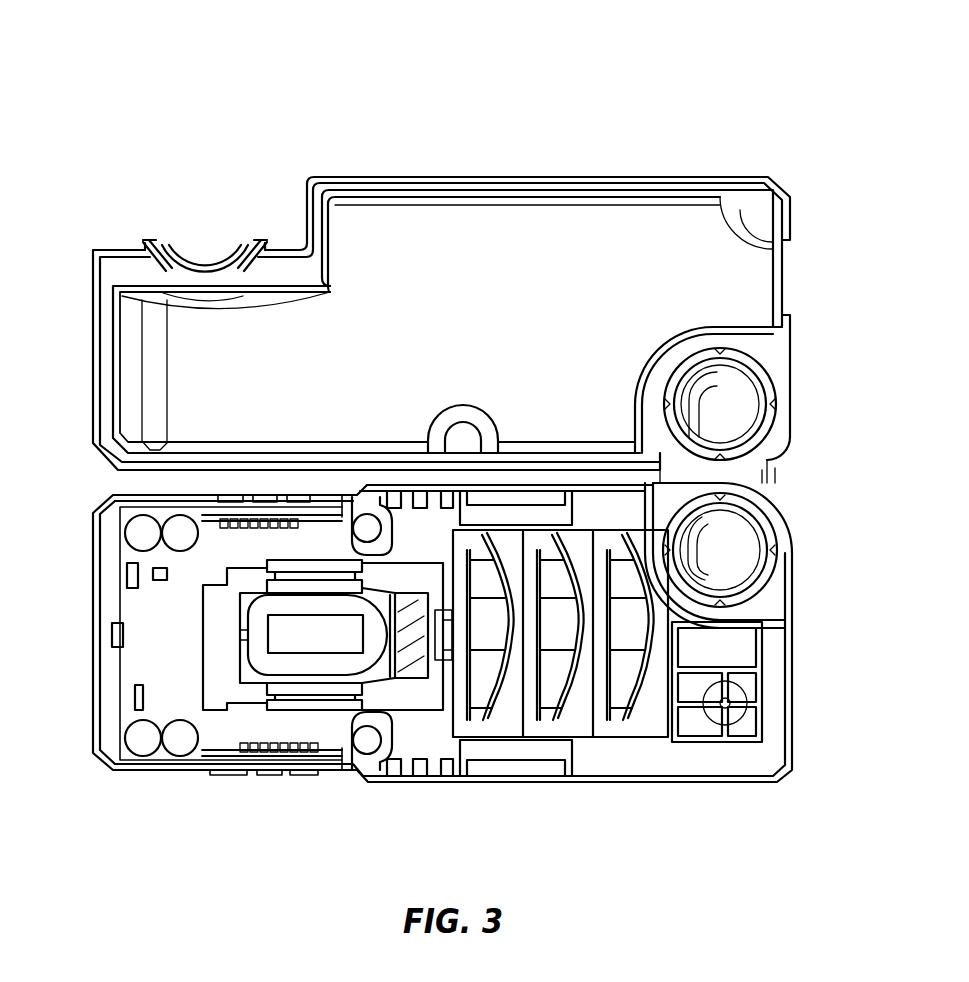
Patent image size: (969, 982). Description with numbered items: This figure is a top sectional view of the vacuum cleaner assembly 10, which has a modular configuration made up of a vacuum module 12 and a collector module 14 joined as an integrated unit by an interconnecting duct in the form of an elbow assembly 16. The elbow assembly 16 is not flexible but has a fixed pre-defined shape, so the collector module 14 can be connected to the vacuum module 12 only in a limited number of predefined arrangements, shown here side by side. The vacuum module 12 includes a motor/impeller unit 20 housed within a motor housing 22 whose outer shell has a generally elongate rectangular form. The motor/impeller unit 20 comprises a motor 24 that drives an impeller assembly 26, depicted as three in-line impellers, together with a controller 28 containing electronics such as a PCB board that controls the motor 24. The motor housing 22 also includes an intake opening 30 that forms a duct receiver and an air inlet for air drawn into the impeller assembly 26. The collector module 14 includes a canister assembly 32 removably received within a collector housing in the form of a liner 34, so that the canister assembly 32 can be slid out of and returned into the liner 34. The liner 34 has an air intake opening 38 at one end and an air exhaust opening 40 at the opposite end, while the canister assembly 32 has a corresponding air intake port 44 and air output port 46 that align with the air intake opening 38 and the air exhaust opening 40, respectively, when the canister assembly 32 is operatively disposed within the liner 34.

The vacuum cleaner assembly 10 is at (720, 65).
The vacuum module 12 is at (670, 803).
The collector module 14 is at (800, 275).
The elbow assembly 16 is at (772, 482).
The motor/impeller unit 20 is at (216, 770).
The motor housing 22 is at (792, 677).
The motor 24 is at (318, 637).
The impeller assembly 26 is at (286, 645).
The controller 28 is at (215, 672).
The intake opening 30 is at (772, 577).
The canister assembly 32 is at (108, 384).
The liner 34 is at (447, 170).
The air intake opening 38 is at (145, 250).
The air exhaust opening 40 is at (773, 395).
The air intake port 44 is at (215, 300).
The air output port 46 is at (770, 413).